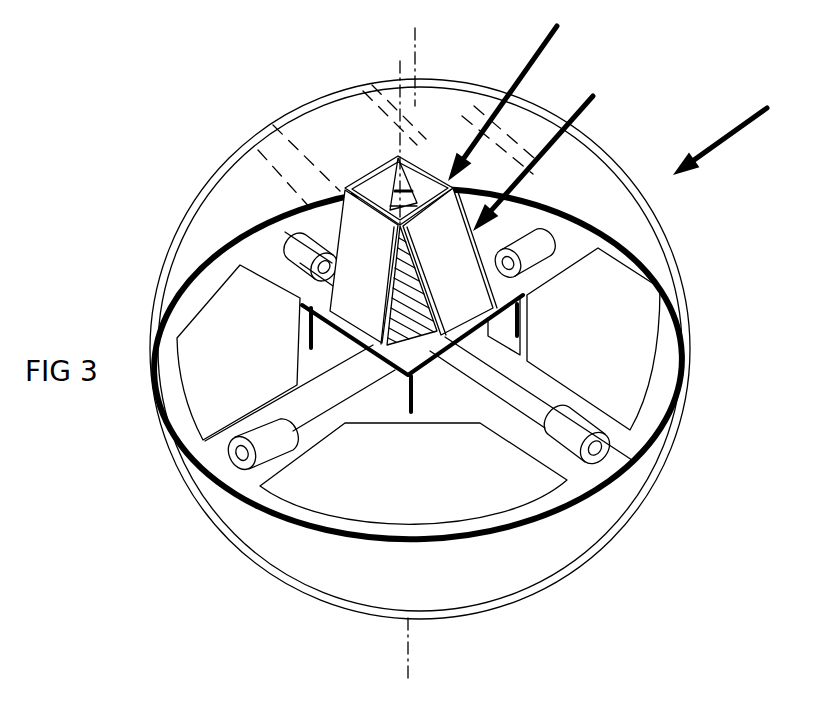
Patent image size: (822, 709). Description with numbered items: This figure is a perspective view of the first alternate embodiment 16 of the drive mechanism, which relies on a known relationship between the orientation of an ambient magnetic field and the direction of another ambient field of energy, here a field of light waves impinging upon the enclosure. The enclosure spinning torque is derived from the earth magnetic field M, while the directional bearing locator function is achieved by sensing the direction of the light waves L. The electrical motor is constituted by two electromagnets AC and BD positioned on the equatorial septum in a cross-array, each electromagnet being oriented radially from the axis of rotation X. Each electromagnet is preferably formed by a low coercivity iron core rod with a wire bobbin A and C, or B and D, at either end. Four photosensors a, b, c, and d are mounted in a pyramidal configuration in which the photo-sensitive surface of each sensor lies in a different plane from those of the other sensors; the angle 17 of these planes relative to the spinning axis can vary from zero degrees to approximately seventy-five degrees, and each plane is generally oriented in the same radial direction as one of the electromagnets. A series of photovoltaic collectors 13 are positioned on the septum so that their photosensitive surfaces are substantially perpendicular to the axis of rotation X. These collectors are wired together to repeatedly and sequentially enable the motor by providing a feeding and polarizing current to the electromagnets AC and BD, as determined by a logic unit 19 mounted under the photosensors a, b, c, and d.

The first alternate embodiment of the drive mechanism 16 is at (174, 182).
The photovoltaic collectors 13 is at (238, 295).
The angle of the planes 17 is at (420, 305).
The logic unit 19 is at (488, 342).
The wire bobbin A is at (250, 486).
The wire bobbin B is at (267, 253).
The wire bobbin C is at (553, 245).
The wire bobbin D is at (575, 468).
The electromagnet AC is at (345, 401).
The electromagnet BD is at (490, 402).
The photosensor a is at (310, 210).
The photosensor b is at (372, 172).
The photosensor c is at (446, 178).
The photosensor d is at (460, 193).
The light waves L is at (530, 68).
The earth magnetic field M is at (732, 141).
The axis of rotation X is at (420, 357).